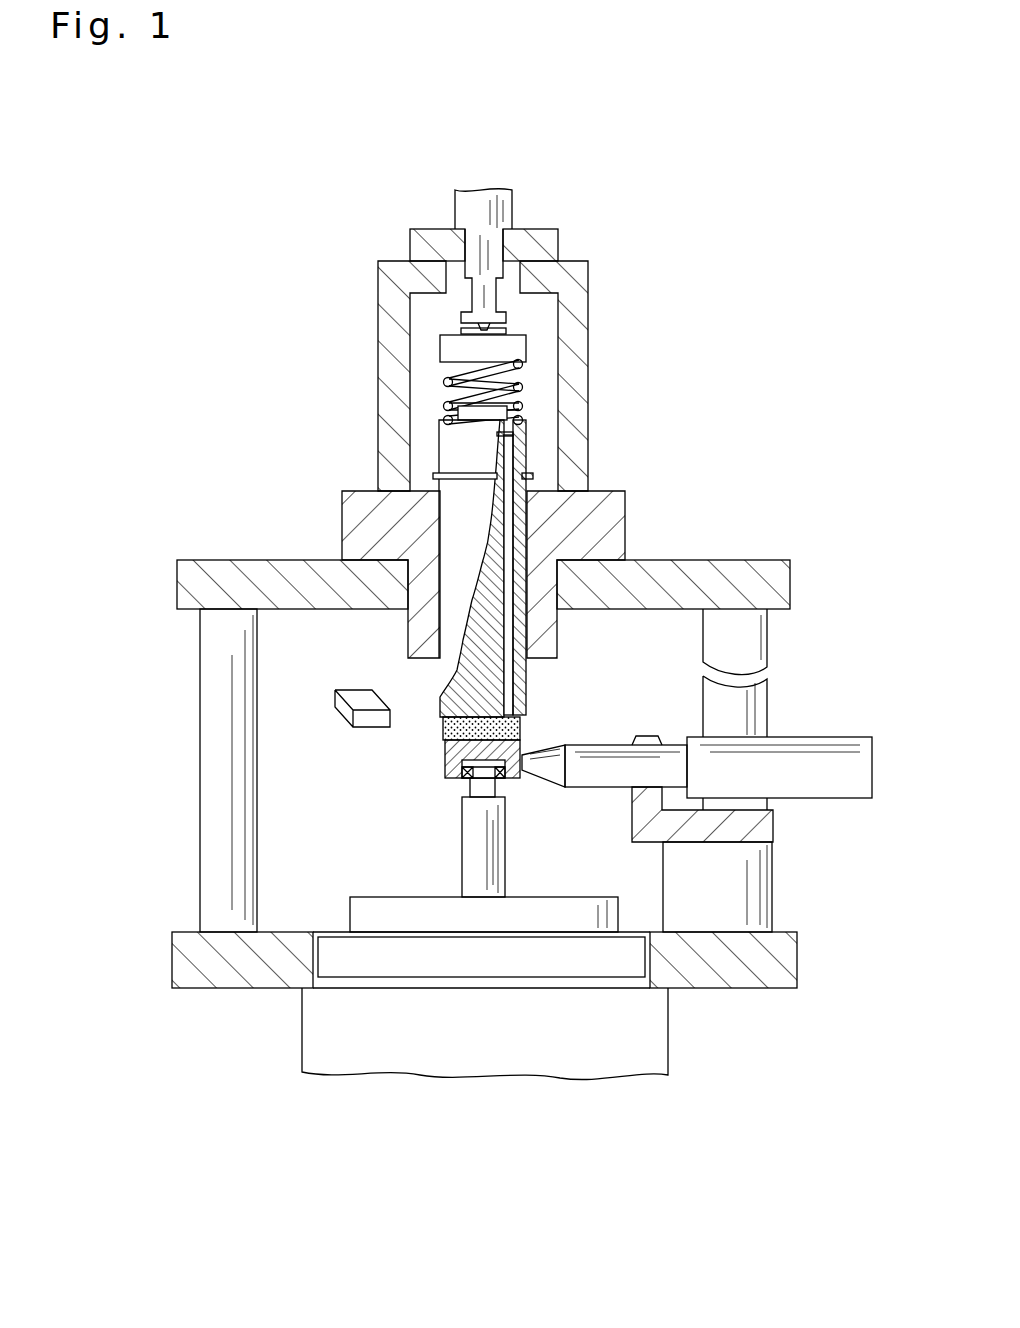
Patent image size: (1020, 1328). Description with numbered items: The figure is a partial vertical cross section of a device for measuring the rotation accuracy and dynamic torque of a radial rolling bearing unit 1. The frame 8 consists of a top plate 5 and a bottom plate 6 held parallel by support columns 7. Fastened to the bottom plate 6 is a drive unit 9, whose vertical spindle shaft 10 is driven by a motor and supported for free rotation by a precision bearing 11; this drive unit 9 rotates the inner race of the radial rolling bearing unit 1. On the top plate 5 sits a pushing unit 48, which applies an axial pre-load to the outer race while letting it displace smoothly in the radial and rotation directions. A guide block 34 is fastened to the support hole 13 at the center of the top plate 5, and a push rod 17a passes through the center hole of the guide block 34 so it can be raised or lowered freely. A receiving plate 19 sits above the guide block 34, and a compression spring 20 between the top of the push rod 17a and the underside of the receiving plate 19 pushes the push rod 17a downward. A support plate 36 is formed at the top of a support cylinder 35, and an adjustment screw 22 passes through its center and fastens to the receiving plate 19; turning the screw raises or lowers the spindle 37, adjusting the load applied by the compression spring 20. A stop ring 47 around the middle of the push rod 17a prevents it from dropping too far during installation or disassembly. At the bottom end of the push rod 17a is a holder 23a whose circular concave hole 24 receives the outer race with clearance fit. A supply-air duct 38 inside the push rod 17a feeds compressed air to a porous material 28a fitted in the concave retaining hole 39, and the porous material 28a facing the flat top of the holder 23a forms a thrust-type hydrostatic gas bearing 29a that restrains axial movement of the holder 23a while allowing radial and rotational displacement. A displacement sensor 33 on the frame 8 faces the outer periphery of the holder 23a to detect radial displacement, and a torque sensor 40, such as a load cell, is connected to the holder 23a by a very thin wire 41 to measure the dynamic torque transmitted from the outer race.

The radial rolling bearing unit 1 is at (497, 780).
The top plate 5 is at (753, 575).
The bottom plate 6 is at (732, 978).
The support columns 7 is at (753, 638).
The frame 8 is at (198, 668).
The drive unit 9 is at (565, 1078).
The spindle shaft 10 is at (470, 880).
The precision bearing 11 is at (657, 1025).
The support hole 13 is at (412, 580).
The push rod 17a is at (453, 523).
The receiving plate 19 is at (512, 350).
The compression spring 20 is at (443, 378).
The adjustment screw 22 is at (493, 205).
The holder 23a is at (463, 778).
The circular concave hole 24 is at (462, 783).
The porous material 28a is at (445, 697).
The hydrostatic gas bearing 29a is at (517, 727).
The displacement sensor 33 is at (578, 772).
The guide block 34 is at (615, 545).
The support cylinder 35 is at (580, 393).
The support plate 36 is at (553, 243).
The spindle 37 is at (478, 295).
The supply-air duct 38 is at (512, 657).
The concave retaining hole 39 is at (515, 690).
The torque sensor 40 is at (345, 715).
The wire 41 is at (445, 763).
The stop ring 47 is at (470, 470).
The pushing unit 48 is at (600, 482).